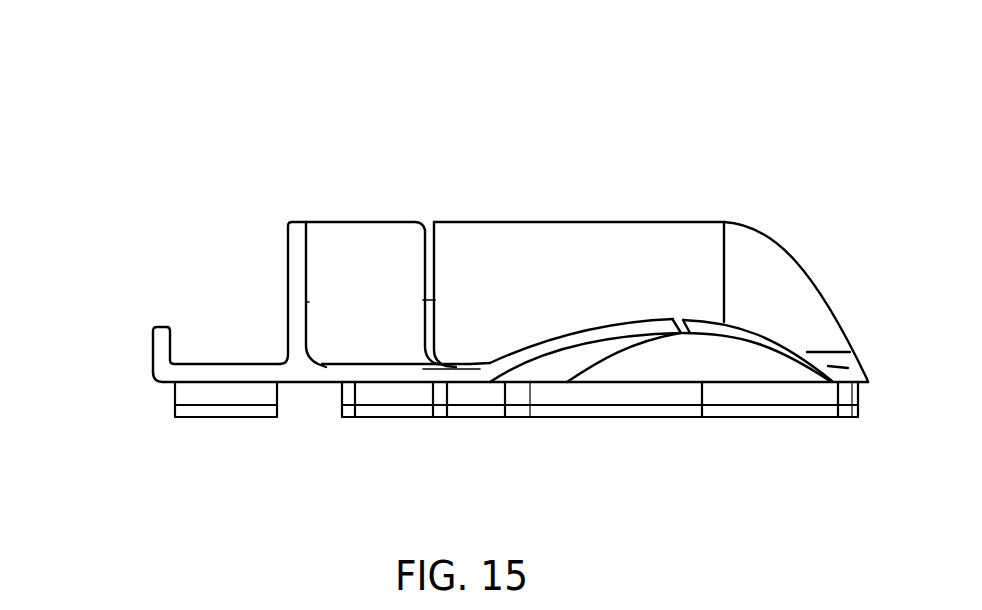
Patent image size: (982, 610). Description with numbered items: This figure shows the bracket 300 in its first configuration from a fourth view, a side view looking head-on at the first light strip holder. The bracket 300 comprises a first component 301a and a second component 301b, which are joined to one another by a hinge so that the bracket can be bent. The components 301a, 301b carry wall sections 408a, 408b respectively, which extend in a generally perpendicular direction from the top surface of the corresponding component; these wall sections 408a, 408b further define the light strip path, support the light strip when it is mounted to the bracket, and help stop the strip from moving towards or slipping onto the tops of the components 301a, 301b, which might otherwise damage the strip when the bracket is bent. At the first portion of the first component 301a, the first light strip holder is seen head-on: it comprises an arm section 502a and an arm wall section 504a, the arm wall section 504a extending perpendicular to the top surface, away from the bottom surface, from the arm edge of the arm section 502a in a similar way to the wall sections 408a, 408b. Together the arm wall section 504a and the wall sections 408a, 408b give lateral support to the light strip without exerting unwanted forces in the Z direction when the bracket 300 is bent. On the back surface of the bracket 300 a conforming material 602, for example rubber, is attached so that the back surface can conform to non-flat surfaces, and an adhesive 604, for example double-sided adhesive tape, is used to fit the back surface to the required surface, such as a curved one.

The bracket 300 is at (460, 288).
The first component 301a is at (377, 200).
The second component 301b is at (592, 200).
The wall section 408a is at (303, 222).
The wall section 408b is at (492, 218).
The arm section 502a is at (230, 364).
The arm wall section 504a is at (153, 347).
The conforming material 602 is at (175, 389).
The adhesive 604 is at (222, 422).